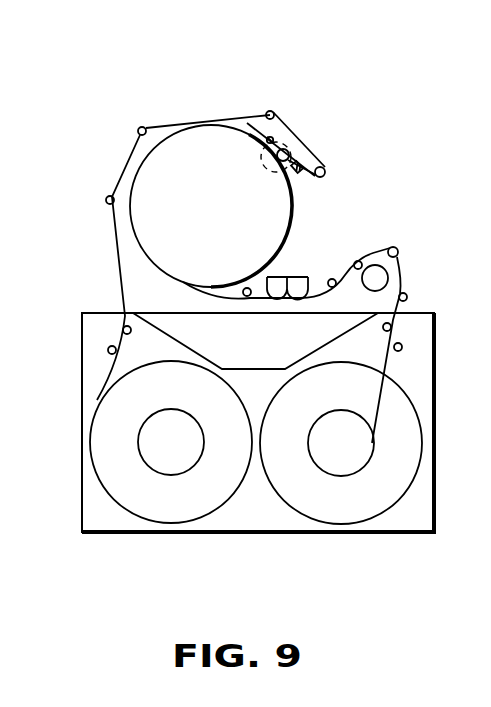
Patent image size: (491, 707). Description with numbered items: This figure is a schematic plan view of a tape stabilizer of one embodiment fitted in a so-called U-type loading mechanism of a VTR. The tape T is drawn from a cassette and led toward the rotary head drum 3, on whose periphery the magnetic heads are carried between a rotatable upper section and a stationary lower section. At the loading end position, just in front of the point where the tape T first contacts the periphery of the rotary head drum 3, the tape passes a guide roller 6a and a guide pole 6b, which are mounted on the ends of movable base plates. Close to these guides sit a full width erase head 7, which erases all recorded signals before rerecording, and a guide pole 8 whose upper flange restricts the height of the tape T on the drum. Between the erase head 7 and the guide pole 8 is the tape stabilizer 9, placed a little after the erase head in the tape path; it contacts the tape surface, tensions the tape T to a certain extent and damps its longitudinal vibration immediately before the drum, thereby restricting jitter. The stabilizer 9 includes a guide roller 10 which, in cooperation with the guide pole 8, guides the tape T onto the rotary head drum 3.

The tape T is at (107, 178).
The rotary head drum 3 is at (292, 207).
The guide roller 6a is at (326, 168).
The guide pole 6b is at (272, 110).
The full width erase head 7 is at (313, 184).
The guide pole 8 is at (267, 137).
The tape stabilizer 9 is at (297, 135).
The guide roller 10 is at (301, 143).